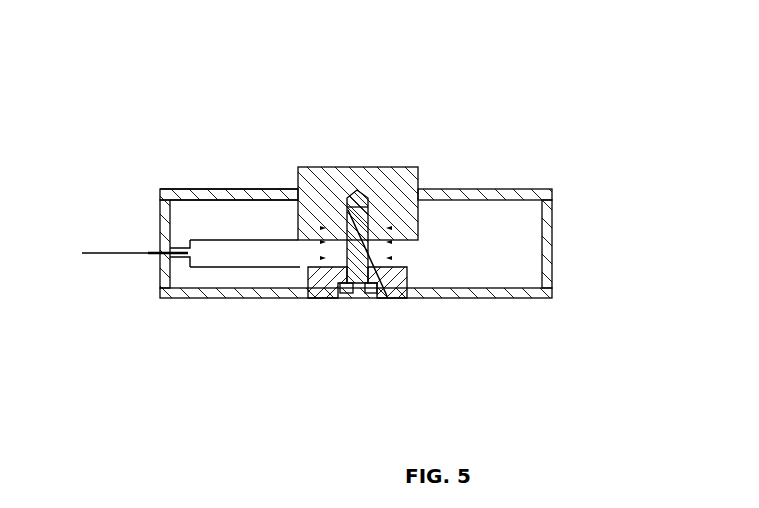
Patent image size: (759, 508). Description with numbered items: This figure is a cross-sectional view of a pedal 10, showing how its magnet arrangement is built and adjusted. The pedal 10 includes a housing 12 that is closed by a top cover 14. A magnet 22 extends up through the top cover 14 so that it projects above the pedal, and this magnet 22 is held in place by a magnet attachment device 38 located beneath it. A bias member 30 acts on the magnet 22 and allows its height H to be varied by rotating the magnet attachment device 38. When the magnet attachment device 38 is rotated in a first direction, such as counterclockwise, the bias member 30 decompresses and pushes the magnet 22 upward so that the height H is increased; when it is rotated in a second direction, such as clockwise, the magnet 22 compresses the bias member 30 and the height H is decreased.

The pedal 10 is at (150, 113).
The housing 12 is at (553, 258).
The top cover 14 is at (248, 188).
The magnet 22 is at (419, 169).
The bias member 30 is at (404, 255).
The magnet attachment device 38 is at (388, 297).
The height H is at (172, 252).